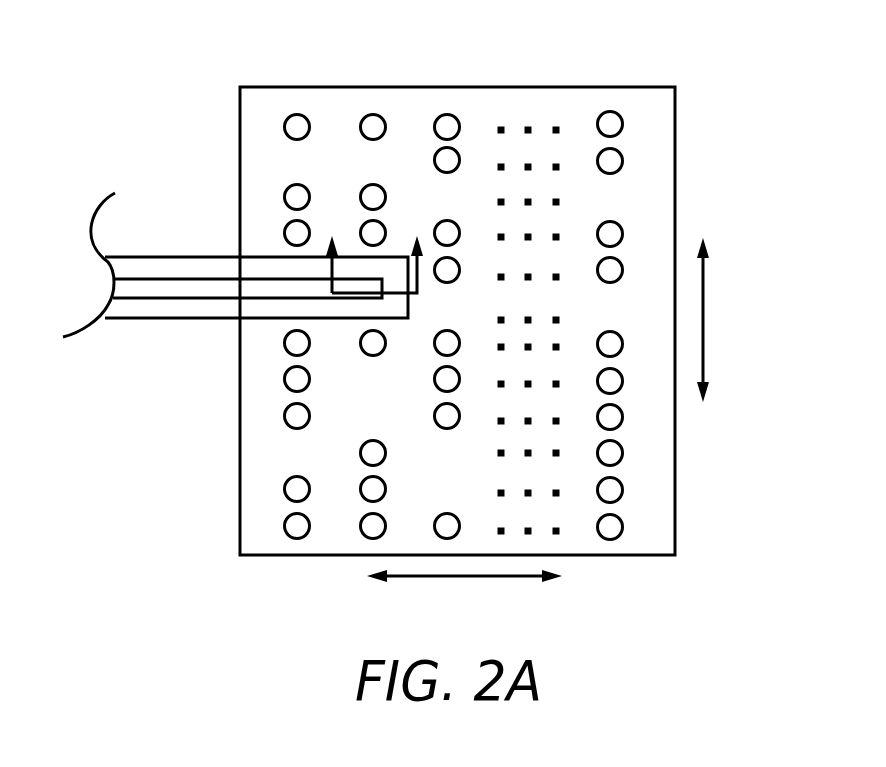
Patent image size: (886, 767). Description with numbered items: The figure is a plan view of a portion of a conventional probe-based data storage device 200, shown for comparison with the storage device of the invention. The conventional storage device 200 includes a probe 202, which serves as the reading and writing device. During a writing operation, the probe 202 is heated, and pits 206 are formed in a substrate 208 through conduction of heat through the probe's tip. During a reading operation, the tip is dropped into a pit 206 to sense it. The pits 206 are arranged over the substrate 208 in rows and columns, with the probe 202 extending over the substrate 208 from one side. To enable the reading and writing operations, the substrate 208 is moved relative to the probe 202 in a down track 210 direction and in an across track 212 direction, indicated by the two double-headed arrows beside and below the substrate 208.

The conventional storage device 200 is at (725, 53).
The probe 202 is at (159, 257).
The pits 206 is at (300, 113).
The substrate 208 is at (445, 87).
The down track direction 210 is at (703, 300).
The across track direction 212 is at (503, 578).